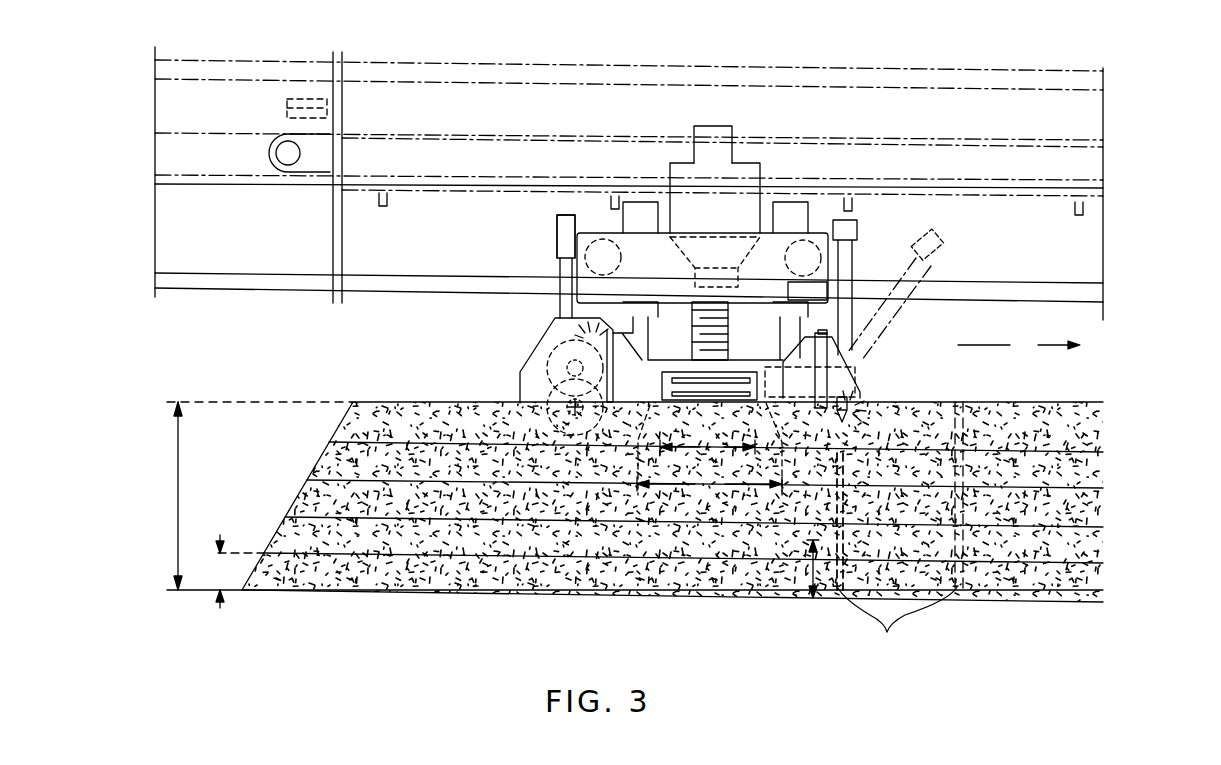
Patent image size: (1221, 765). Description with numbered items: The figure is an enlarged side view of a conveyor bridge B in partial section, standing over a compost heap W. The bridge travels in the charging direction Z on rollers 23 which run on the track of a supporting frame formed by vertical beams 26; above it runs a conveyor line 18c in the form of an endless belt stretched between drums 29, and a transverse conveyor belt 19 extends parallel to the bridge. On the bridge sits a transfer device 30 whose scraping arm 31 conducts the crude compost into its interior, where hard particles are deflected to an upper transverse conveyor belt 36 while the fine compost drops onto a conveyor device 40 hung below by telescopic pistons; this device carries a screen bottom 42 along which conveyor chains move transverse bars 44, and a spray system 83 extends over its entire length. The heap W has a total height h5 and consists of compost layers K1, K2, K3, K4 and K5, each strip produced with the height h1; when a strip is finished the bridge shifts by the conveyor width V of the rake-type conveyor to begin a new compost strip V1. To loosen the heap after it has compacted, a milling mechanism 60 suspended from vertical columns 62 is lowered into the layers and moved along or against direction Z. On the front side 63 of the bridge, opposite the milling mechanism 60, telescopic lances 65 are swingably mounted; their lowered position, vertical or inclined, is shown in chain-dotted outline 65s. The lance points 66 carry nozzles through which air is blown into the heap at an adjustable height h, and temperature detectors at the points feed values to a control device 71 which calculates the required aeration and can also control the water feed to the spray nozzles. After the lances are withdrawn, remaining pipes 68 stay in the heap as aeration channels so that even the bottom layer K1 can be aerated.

The vertical beams 26 is at (251, 70).
The transverse conveyor belt 19 is at (300, 97).
The drums 29 is at (282, 150).
The conveyor line 18c is at (312, 136).
The rollers 23 is at (238, 274).
The transfer device 30 is at (711, 196).
The scraping arm 31 is at (722, 137).
The front side 63 is at (822, 258).
The vertical columns 62 is at (560, 250).
The conveyor bridge B is at (557, 233).
The telescopic lances 65 is at (848, 275).
The lowered lance outline 65s is at (920, 270).
The conveyor device 40 is at (664, 287).
The upper transverse conveyor belt 36 is at (730, 282).
The control device 71 is at (816, 299).
The milling mechanism 60 is at (530, 347).
The compost heap W is at (345, 464).
The transverse bars 44 is at (684, 384).
The screen bottom 42 is at (724, 385).
The spray system 83 is at (807, 381).
The lance points 66 is at (842, 492).
The remaining pipes 68 is at (897, 622).
The compost layer K5 is at (1092, 432).
The compost layer K4 is at (1092, 474).
The compost layer K3 is at (1093, 510).
The compost layer K2 is at (1093, 549).
The bottom compost layer K1 is at (1092, 585).
The heap height h5 is at (204, 496).
The layer height h1 is at (238, 571).
The aeration height h is at (798, 569).
The conveyor width V is at (707, 448).
The compost strip V1 is at (709, 488).
The charging direction Z is at (1019, 345).